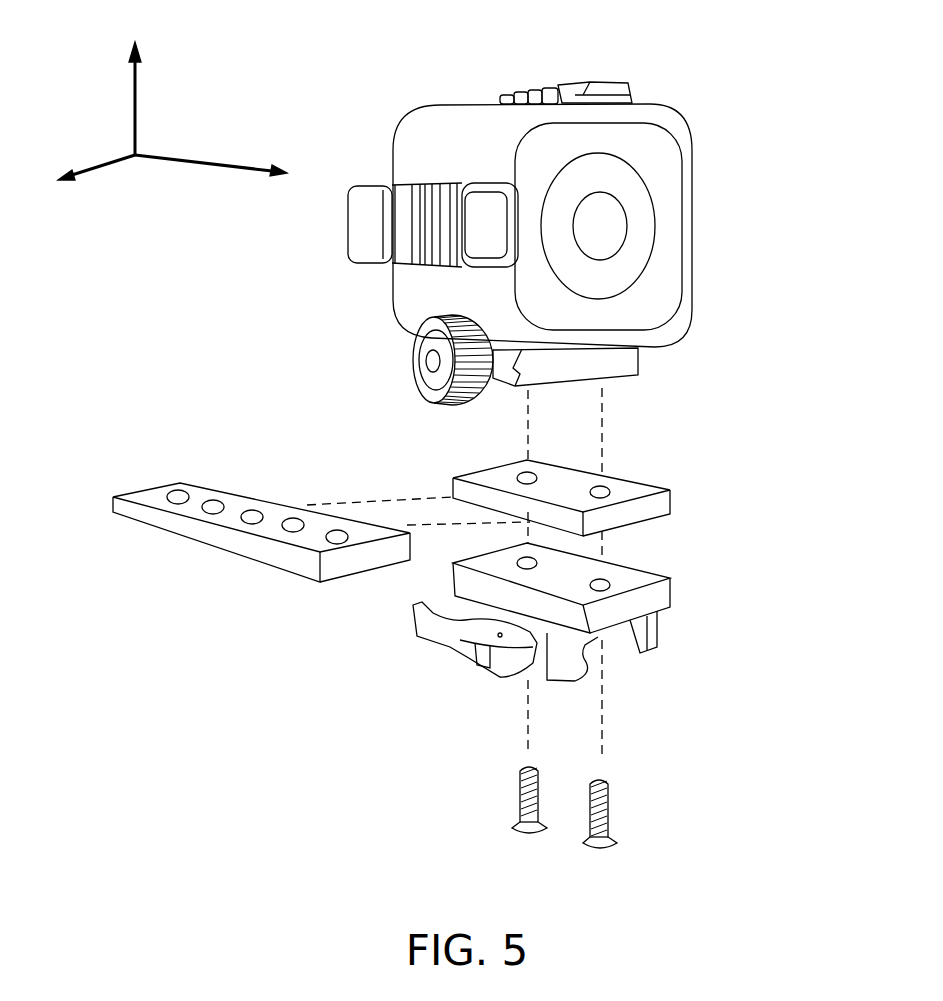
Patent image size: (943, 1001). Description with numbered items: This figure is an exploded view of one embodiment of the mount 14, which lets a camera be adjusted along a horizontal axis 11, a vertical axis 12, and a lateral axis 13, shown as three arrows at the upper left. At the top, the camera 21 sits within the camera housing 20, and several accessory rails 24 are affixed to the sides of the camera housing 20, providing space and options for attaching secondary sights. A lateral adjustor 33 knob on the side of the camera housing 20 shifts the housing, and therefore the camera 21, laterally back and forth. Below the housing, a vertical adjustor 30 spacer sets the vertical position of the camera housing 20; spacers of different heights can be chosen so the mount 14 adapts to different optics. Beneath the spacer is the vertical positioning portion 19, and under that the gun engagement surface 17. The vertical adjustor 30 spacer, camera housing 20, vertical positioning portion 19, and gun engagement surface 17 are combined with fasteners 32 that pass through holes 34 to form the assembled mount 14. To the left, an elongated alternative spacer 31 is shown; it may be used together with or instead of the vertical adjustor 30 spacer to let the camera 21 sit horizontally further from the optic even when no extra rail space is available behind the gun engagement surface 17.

The horizontal axis 11 is at (223, 174).
The vertical axis 12 is at (130, 85).
The lateral axis 13 is at (81, 174).
The mount 14 is at (544, 214).
The gun engagement surface 17 is at (643, 628).
The vertical positioning portion 19 is at (655, 593).
The camera housing 20 is at (657, 335).
The camera 21 is at (665, 170).
The accessory rails 24 is at (540, 93).
The vertical adjustor spacer 30 is at (658, 502).
The elongated alternative spacer 31 is at (155, 498).
The fasteners 32 is at (538, 783).
The lateral adjustor knob 33 is at (460, 361).
The holes 34 is at (593, 495).